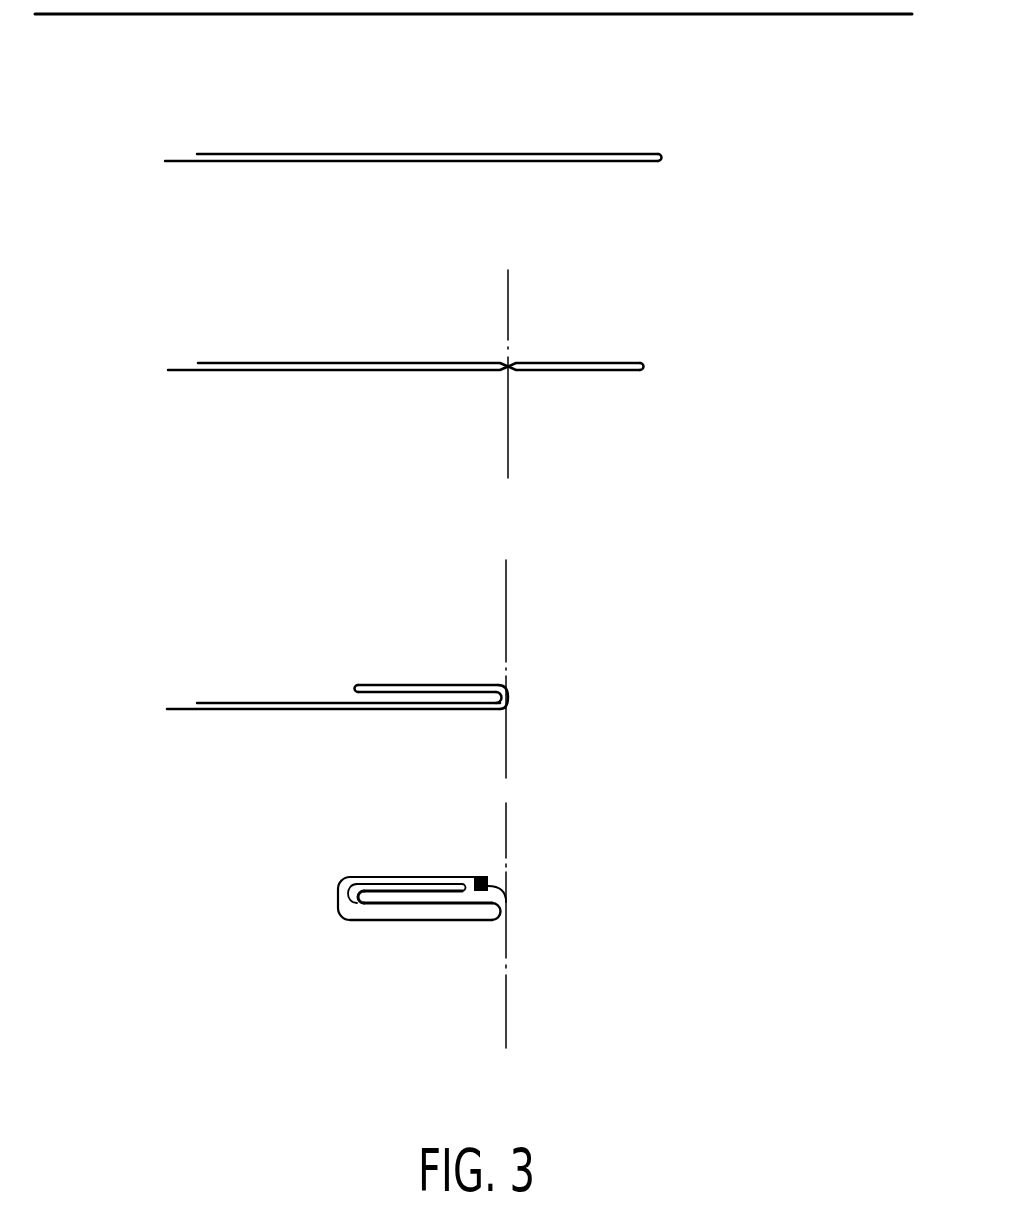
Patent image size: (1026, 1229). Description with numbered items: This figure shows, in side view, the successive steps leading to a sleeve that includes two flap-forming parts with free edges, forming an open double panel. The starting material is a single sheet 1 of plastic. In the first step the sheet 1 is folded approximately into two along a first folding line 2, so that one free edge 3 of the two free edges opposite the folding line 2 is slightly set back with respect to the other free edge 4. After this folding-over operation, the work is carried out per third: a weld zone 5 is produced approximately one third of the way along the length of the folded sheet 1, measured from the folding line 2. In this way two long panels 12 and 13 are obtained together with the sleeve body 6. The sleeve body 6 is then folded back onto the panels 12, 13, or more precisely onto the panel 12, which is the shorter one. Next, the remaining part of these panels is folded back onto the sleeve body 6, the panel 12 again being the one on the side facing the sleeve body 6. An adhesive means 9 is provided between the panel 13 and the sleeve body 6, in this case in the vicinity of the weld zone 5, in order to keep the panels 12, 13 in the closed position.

The sheet 1 is at (688, 15).
The first folding line 2 is at (428, 493).
The free edge 3 is at (197, 153).
The free edge 4 is at (168, 163).
The weld zone 5 is at (510, 361).
The sleeve body 6 is at (622, 373).
The adhesive means 9 is at (490, 883).
The panel 12 is at (298, 362).
The panel 13 is at (275, 373).